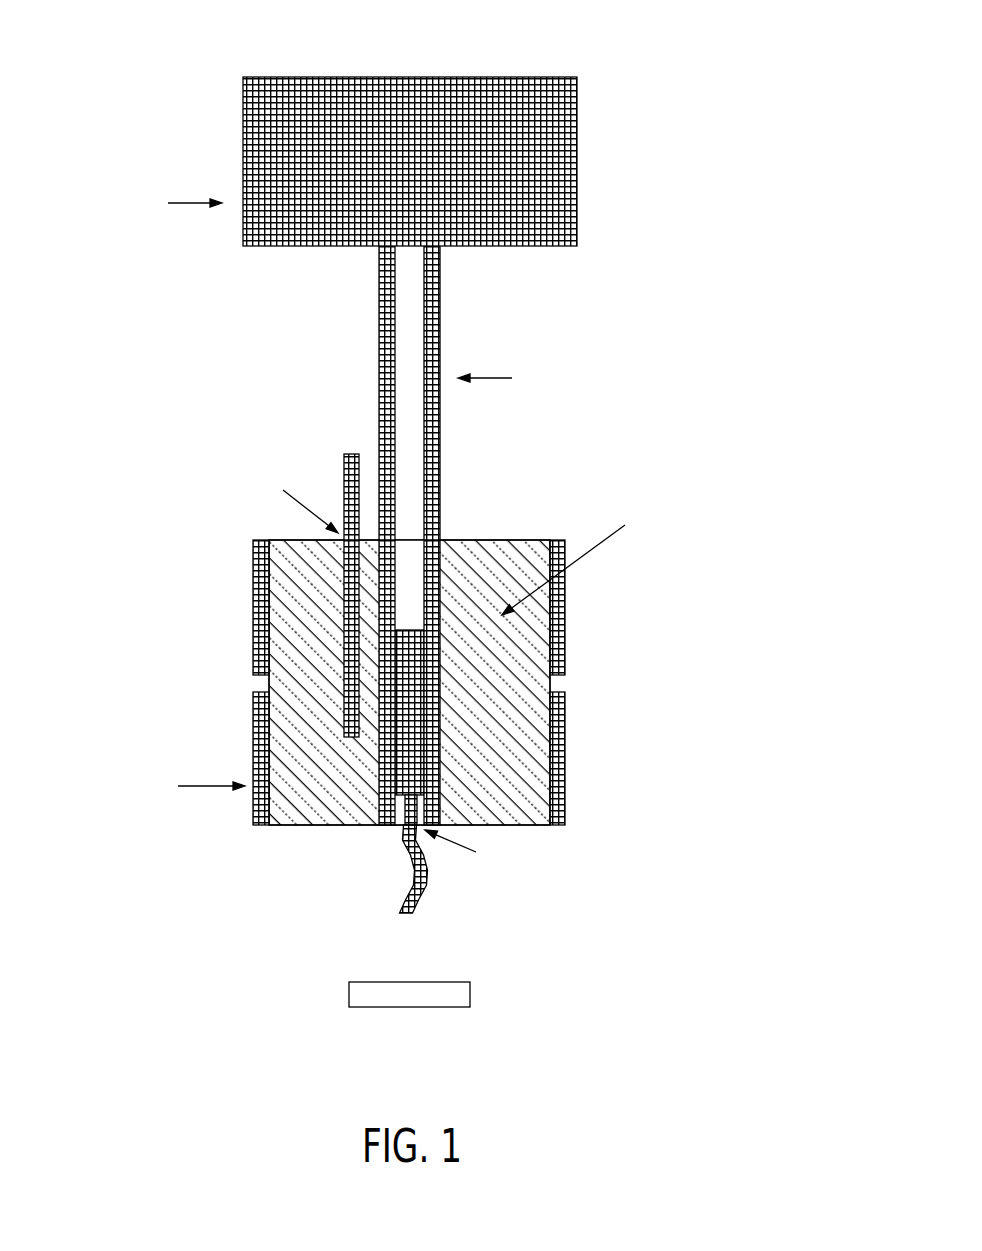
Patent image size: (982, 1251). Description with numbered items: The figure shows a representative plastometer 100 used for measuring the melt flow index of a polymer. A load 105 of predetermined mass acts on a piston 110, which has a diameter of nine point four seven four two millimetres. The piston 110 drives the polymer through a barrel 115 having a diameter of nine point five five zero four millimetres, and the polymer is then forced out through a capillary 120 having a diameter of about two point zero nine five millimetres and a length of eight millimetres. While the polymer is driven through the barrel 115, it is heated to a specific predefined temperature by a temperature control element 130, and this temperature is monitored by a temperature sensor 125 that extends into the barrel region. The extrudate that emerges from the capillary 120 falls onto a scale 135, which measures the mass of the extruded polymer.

The capillary rheometer system 100 is at (729, 70).
The load 105 is at (578, 165).
The piston 110 is at (440, 338).
The barrel 115 is at (565, 783).
The capillary 120 is at (386, 836).
The temperature sensor 125 is at (352, 452).
The temperature control element 130 is at (253, 615).
The scale 135 is at (410, 1008).